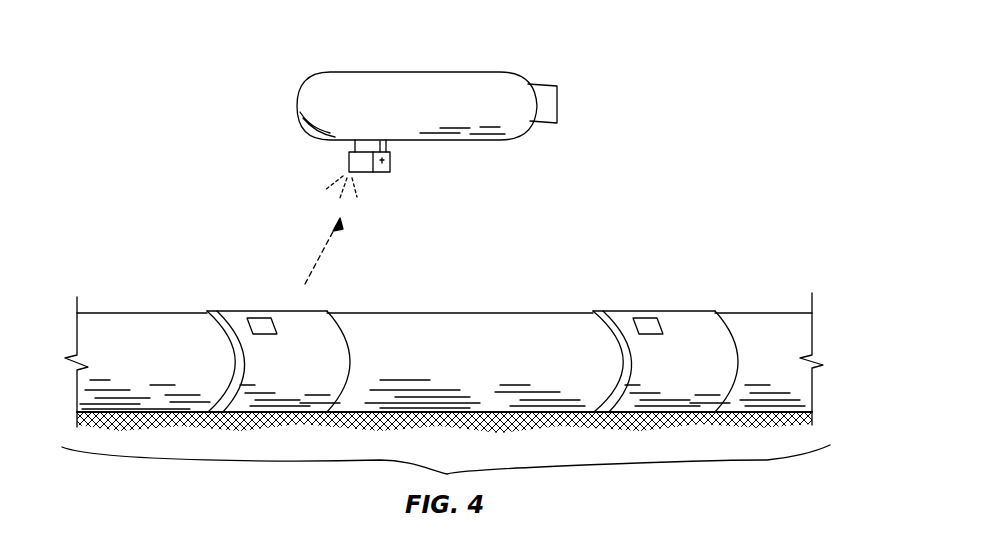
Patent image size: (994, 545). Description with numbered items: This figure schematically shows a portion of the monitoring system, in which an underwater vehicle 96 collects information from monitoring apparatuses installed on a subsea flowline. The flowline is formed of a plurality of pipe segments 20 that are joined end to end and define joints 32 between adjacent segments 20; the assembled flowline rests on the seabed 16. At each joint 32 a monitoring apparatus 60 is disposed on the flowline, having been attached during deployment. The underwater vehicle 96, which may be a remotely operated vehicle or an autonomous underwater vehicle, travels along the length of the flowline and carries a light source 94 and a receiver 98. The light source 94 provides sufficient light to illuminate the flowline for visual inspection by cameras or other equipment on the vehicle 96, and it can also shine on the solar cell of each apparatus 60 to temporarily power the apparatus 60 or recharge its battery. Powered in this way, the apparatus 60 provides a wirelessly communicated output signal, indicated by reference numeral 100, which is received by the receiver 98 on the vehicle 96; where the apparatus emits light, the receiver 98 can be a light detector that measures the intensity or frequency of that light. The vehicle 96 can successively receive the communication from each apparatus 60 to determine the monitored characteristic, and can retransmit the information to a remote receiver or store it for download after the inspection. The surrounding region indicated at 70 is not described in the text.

The seabed 16 is at (492, 410).
The pipe segments 20 is at (148, 328).
The joints 32 is at (305, 320).
The monitoring apparatus 60 is at (256, 318).
The monitoring system 70 is at (568, 217).
The light source 94 is at (349, 160).
The underwater vehicle 96 is at (419, 117).
The receiver 98 is at (390, 162).
The output signal 100 is at (322, 248).